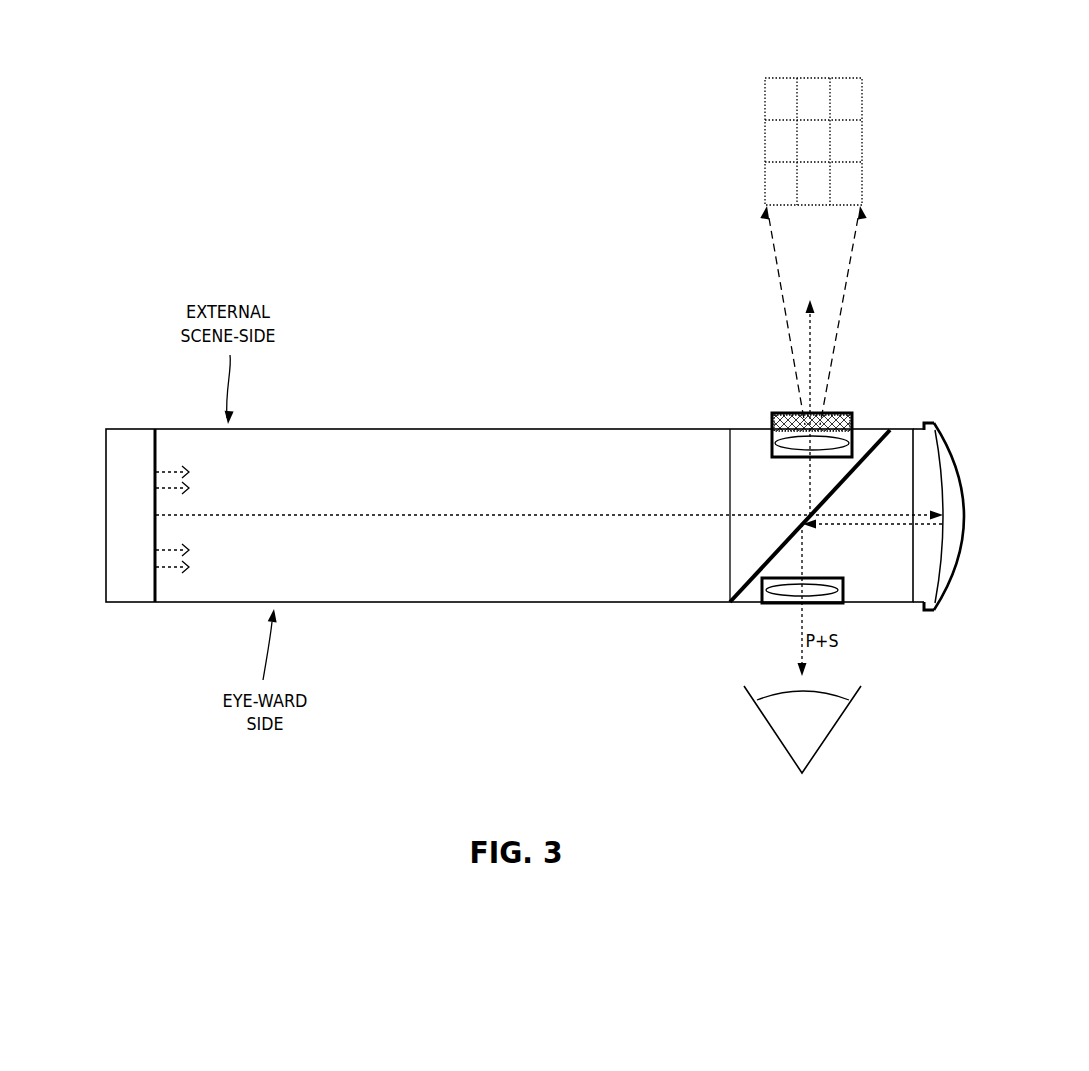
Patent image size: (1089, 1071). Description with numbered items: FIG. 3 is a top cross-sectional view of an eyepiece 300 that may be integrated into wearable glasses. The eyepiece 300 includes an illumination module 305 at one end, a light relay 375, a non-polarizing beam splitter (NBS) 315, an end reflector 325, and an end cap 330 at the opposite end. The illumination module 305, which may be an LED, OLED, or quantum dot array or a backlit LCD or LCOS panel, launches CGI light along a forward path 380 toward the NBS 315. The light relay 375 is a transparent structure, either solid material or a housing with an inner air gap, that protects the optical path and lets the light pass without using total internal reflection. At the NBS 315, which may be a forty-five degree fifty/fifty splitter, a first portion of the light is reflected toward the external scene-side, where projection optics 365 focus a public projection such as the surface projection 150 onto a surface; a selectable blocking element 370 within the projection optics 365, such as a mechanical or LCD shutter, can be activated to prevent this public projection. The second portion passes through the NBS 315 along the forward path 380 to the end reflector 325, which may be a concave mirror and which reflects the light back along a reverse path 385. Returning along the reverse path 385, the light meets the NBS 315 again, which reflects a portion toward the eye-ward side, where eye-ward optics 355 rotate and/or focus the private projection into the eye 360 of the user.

The surface projection 150 is at (880, 130).
The eyepiece 300 is at (445, 400).
The illumination module 305 is at (122, 428).
The non-polarizing beam splitter 315 is at (886, 427).
The end reflector 325 is at (945, 563).
The end cap 330 is at (948, 466).
The eye-ward optics 355 is at (762, 600).
The eye 360 is at (790, 745).
The projection optics 365 is at (772, 455).
The selectable blocking element 370 is at (790, 428).
The light relay 375 is at (315, 428).
The forward path 380 is at (457, 518).
The reverse path 385 is at (833, 526).